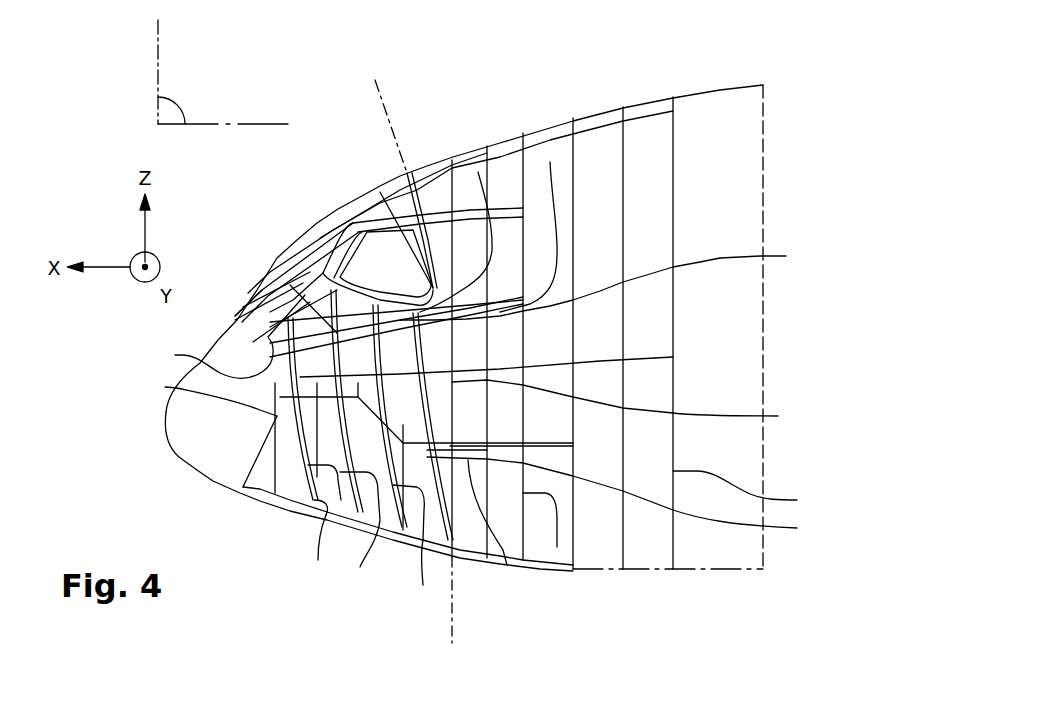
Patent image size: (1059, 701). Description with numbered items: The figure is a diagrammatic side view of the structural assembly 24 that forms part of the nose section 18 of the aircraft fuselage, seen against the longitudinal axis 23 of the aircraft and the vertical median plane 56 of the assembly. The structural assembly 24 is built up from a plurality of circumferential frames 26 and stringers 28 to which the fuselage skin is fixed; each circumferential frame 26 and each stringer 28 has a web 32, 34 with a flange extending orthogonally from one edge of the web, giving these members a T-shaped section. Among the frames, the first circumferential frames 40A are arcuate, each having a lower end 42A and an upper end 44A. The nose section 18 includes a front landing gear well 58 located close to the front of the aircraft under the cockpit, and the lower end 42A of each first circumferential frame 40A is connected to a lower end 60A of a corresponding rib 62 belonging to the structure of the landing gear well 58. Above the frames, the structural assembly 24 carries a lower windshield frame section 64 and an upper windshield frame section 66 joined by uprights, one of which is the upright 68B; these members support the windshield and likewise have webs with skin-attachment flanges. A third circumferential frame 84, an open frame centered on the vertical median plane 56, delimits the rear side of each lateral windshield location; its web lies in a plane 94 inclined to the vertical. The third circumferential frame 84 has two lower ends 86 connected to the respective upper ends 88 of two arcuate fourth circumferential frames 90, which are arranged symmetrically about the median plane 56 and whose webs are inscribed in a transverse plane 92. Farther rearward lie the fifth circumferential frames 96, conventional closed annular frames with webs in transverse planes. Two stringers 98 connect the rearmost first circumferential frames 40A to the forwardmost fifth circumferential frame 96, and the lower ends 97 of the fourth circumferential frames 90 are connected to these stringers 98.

The nose section 18 is at (276, 251).
The longitudinal axis 23 is at (270, 123).
The structural assembly 24 is at (688, 180).
The circumferential frames 26 is at (553, 552).
The stringers 28 is at (202, 336).
The web 32 is at (557, 547).
The web 34 is at (176, 355).
The first circumferential frames 40A is at (360, 567).
The lower end 42A is at (318, 560).
The upper end 44A is at (786, 256).
The vertical median plane 56 is at (172, 114).
The front landing gear well 58 is at (542, 443).
The lower end 60A is at (318, 517).
The rib 62 is at (166, 387).
The lower windshield frame section 64 is at (280, 287).
The upper windshield frame section 66 is at (353, 222).
The upright 68B is at (398, 185).
The third circumferential frame 84 is at (448, 216).
The lower ends 86 is at (478, 172).
The upper ends 88 is at (550, 162).
The fourth circumferential frames 90 is at (778, 416).
The transverse plane 92 is at (450, 637).
The inclined plane 94 is at (388, 100).
The fifth circumferential frames 96 is at (797, 500).
The lower ends 97 is at (797, 528).
The stringers 98 is at (507, 565).